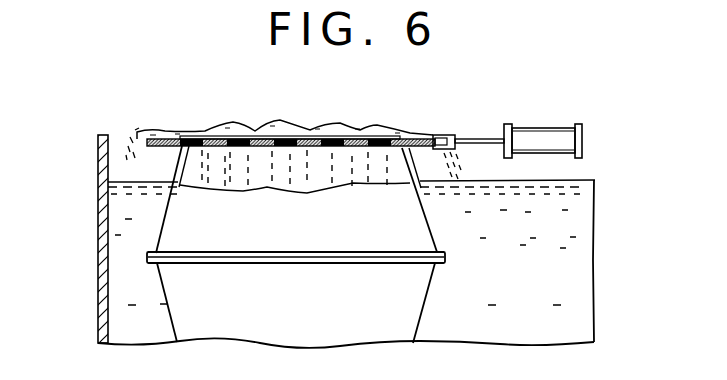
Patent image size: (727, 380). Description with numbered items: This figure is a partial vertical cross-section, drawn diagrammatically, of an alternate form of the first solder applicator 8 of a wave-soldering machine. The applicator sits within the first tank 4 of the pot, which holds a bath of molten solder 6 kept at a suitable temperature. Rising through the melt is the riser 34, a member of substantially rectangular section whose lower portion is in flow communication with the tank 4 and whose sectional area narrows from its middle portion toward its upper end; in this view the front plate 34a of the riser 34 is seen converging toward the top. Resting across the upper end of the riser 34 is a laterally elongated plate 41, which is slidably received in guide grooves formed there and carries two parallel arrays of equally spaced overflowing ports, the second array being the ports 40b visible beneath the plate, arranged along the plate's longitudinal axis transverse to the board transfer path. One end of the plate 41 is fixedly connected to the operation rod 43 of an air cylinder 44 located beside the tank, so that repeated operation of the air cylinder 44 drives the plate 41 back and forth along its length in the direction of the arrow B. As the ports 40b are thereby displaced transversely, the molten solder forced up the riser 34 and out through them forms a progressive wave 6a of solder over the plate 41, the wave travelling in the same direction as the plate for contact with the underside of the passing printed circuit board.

The first tank 4 is at (98, 254).
The molten solder 6 is at (577, 257).
The progressive wave 6a is at (328, 128).
The first solder applicator 8 is at (158, 288).
The riser 34 is at (165, 218).
The front plate 34a is at (421, 240).
The overflowing ports 40b is at (238, 142).
The plate 41 is at (163, 137).
The operation rod 43 is at (473, 139).
The air cylinder 44 is at (541, 134).
The arrow B is at (430, 96).